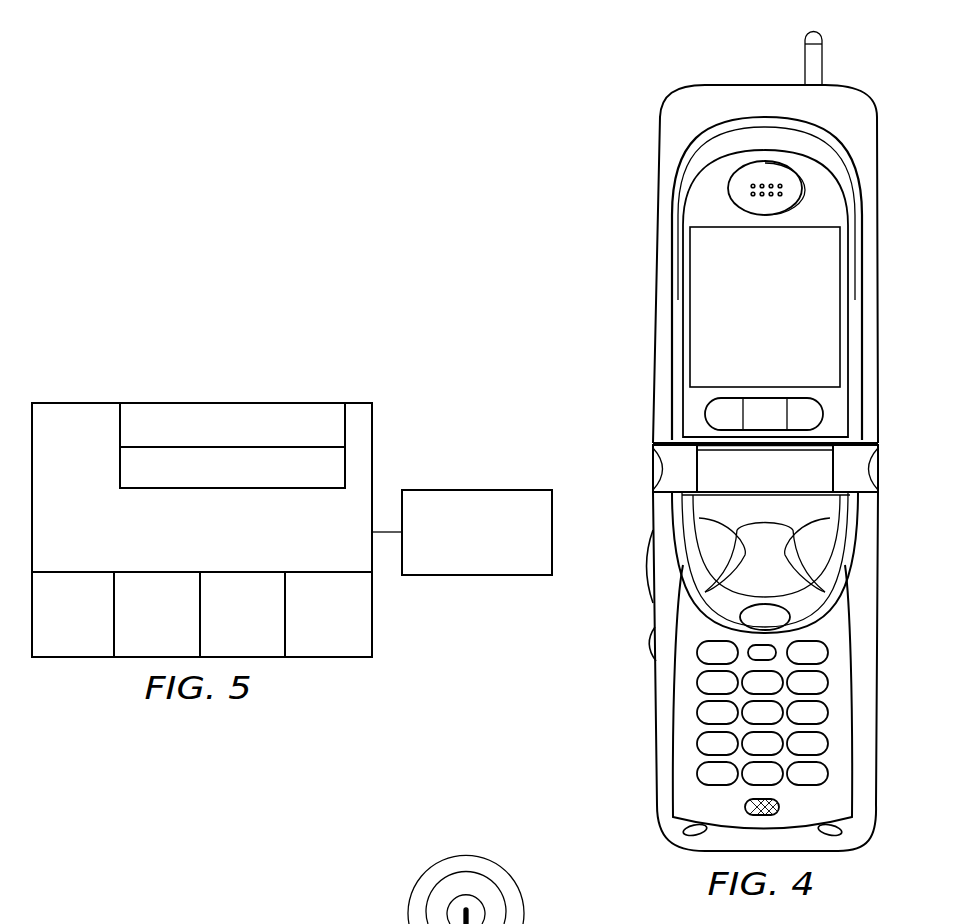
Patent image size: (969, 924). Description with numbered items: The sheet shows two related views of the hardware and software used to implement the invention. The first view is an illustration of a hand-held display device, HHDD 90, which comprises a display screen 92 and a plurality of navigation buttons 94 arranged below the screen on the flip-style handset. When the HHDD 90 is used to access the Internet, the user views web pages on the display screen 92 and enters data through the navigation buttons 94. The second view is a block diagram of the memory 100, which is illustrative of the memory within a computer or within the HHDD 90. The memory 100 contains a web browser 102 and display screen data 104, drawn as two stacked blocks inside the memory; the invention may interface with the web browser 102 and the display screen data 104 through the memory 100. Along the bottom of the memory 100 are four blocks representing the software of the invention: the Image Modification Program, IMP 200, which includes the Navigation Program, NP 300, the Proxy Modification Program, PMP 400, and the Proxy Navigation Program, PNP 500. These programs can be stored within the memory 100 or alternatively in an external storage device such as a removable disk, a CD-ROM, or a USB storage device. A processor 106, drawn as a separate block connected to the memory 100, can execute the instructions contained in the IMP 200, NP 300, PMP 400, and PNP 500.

In FIG. 4, the HHDD 90 is at (725, 442).
In FIG. 4, the display screen 92 is at (751, 318).
In FIG. 4, the navigation buttons 94 is at (765, 398).
In FIG. 5, the memory 100 is at (111, 400).
In FIG. 5, the web browser 102 is at (120, 425).
In FIG. 5, the display screen data 104 is at (120, 465).
In FIG. 5, the processor 106 is at (487, 490).
In FIG. 5, the Image Modification Program (IMP) 200 is at (92, 640).
In FIG. 5, the Navigation Program (NP) 300 is at (177, 640).
In FIG. 5, the Proxy Modification Program (PMP) 400 is at (223, 640).
In FIG. 5, the Proxy Navigation Program (PNP) 500 is at (308, 640).